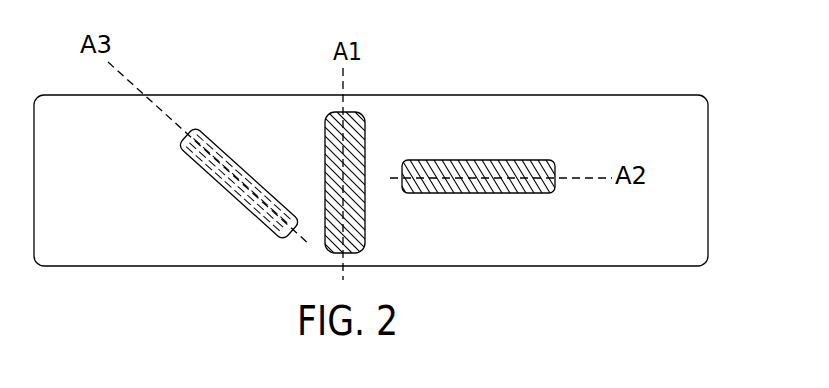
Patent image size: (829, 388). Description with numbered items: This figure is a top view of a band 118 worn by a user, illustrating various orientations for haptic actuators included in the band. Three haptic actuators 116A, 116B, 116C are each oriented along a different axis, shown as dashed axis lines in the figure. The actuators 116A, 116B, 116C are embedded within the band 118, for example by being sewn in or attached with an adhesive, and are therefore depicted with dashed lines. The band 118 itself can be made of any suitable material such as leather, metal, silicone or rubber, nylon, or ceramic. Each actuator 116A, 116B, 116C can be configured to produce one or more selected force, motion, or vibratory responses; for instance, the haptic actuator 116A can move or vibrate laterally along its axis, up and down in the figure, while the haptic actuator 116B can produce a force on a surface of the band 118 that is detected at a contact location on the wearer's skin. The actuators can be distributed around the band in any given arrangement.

The band 118 is at (708, 180).
The haptic actuator 116A is at (363, 207).
The haptic actuator 116B is at (468, 158).
The haptic actuator 116C is at (213, 178).